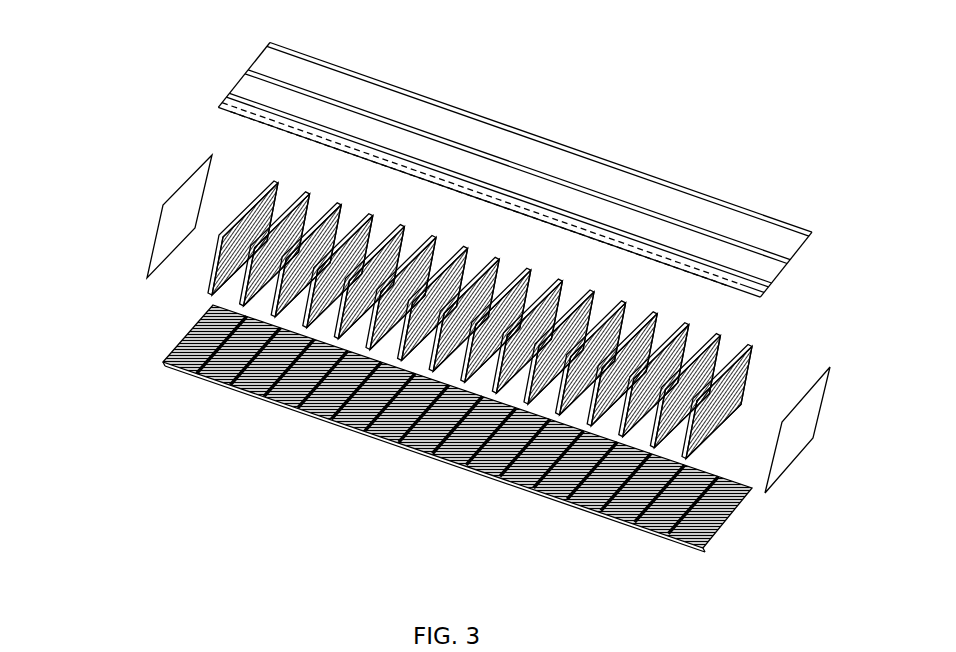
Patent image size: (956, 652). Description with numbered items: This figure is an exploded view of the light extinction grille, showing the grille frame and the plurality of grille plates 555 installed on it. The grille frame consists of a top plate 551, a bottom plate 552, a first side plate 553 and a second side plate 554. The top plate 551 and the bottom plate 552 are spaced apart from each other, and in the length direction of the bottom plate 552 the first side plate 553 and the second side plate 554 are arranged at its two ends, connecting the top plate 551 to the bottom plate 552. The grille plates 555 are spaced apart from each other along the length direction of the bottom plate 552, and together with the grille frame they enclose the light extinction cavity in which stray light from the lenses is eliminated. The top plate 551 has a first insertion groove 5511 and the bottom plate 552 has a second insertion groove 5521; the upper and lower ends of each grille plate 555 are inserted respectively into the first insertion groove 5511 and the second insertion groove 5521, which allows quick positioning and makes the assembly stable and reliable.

The top plate 551 is at (500, 147).
The first insertion groove 5511 is at (253, 113).
The bottom plate 552 is at (403, 443).
The second insertion groove 5521 is at (487, 467).
The first side plate 553 is at (799, 425).
The second side plate 554 is at (177, 221).
The grille plate 555 is at (757, 367).